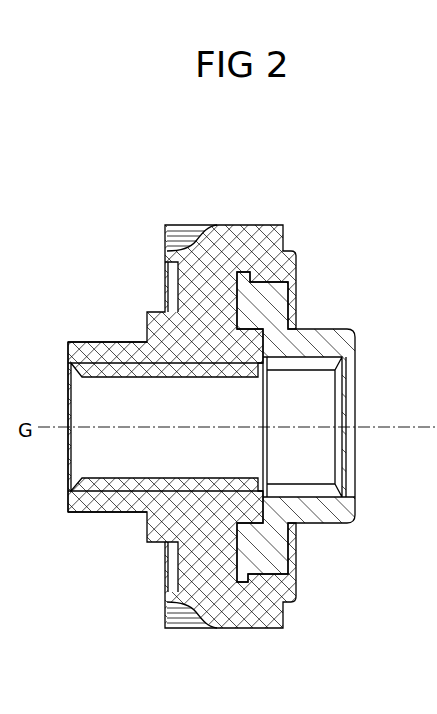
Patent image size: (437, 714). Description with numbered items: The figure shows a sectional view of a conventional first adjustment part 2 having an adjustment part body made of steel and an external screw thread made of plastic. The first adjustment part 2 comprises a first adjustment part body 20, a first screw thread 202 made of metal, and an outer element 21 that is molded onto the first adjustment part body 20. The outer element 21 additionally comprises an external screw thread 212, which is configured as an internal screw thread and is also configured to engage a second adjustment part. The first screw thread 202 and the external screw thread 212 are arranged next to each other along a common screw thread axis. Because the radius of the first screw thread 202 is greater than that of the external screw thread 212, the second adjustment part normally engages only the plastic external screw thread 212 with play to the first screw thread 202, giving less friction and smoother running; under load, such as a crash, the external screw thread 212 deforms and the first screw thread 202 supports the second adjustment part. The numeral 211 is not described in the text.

The first adjustment part 2 is at (363, 193).
The first adjustment part body 20 is at (218, 427).
The outer element 21 is at (218, 402).
The first screw thread 202 is at (315, 360).
The flange 211 is at (238, 245).
The external screw thread 212 is at (170, 367).